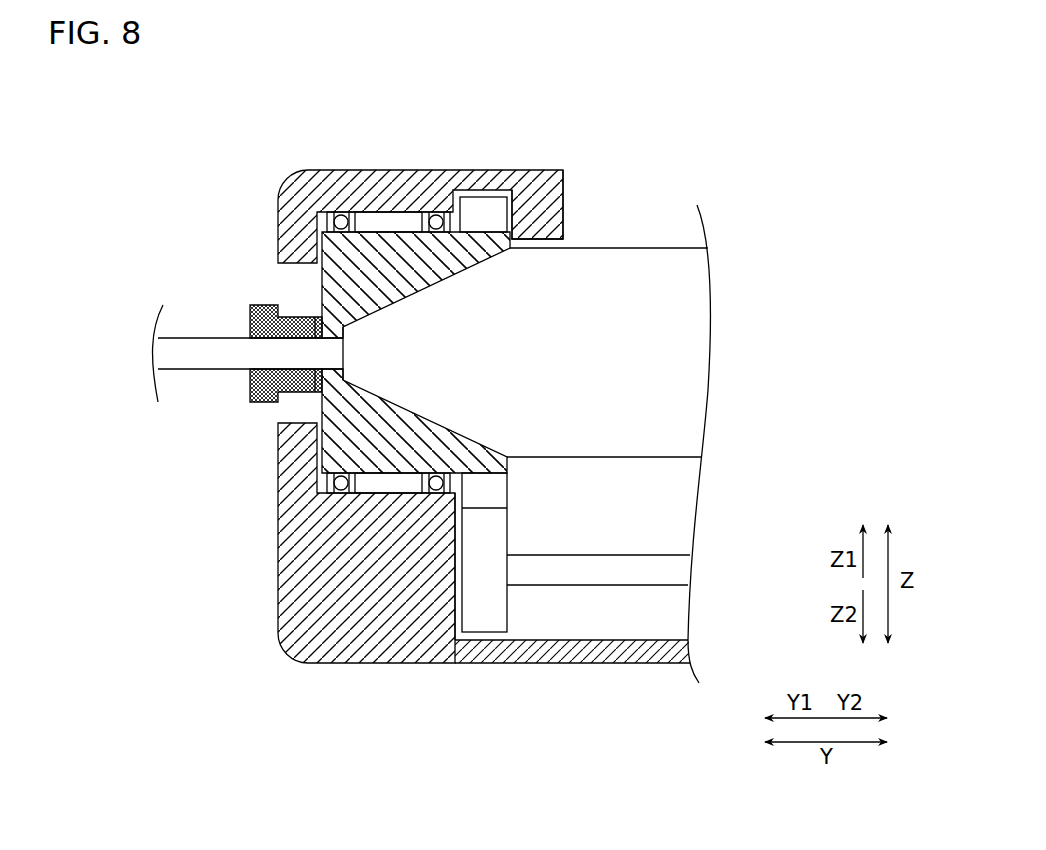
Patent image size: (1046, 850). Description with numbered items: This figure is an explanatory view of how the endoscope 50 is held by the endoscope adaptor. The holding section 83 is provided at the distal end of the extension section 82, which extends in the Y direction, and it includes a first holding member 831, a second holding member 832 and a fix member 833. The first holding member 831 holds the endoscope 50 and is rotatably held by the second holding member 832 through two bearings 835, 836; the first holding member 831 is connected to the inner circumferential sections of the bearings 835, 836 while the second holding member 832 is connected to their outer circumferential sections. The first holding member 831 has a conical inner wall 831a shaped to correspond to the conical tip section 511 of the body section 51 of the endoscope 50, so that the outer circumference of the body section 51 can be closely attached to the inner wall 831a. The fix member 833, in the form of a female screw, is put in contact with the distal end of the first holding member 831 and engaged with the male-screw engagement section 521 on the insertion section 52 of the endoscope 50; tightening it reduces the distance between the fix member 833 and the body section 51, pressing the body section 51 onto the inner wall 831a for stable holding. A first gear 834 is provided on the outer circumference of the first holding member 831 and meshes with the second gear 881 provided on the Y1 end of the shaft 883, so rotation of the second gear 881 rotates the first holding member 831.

The endoscope 50 is at (650, 204).
The body section 51 is at (603, 265).
The tip section 511 is at (403, 327).
The insertion section 52 is at (180, 340).
The engagement section 521 is at (283, 393).
The extension section 82 is at (660, 654).
The holding section 83 is at (235, 598).
The first holding member 831 is at (323, 250).
The inner wall 831a is at (448, 278).
The second holding member 832 is at (292, 543).
The fix member 833 is at (267, 302).
The first gear 834 is at (503, 490).
The bearing 835 is at (340, 212).
The bearing 836 is at (437, 212).
The second gear 881 is at (503, 608).
The shaft 883 is at (617, 570).